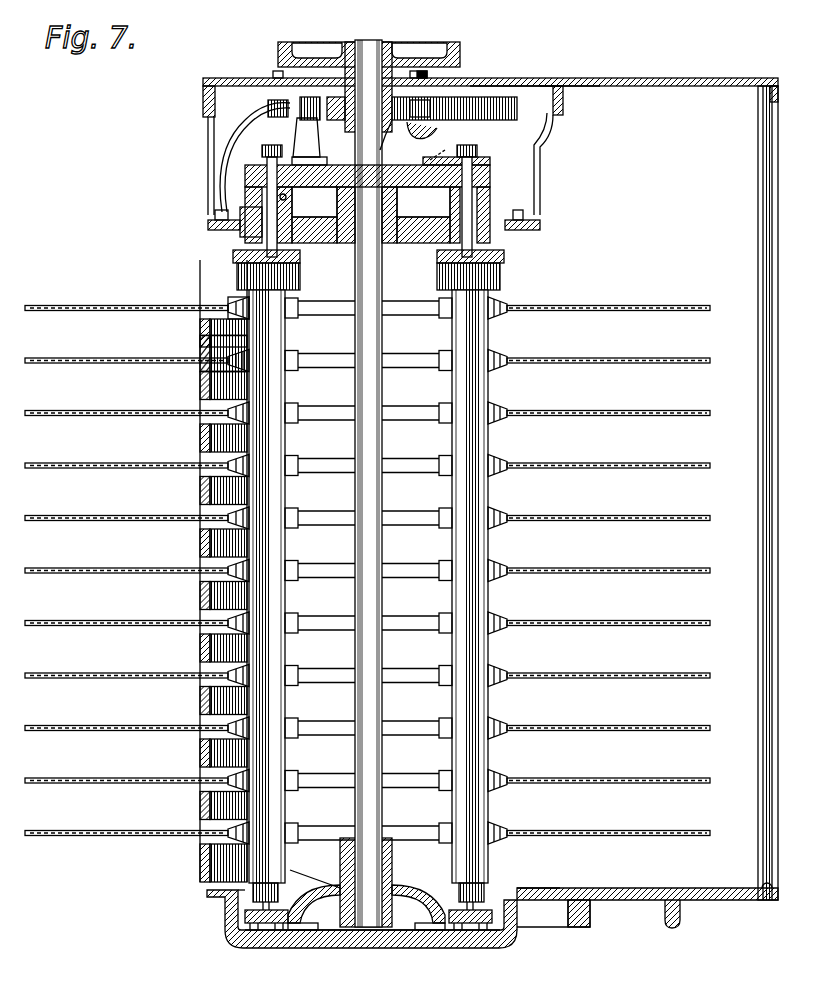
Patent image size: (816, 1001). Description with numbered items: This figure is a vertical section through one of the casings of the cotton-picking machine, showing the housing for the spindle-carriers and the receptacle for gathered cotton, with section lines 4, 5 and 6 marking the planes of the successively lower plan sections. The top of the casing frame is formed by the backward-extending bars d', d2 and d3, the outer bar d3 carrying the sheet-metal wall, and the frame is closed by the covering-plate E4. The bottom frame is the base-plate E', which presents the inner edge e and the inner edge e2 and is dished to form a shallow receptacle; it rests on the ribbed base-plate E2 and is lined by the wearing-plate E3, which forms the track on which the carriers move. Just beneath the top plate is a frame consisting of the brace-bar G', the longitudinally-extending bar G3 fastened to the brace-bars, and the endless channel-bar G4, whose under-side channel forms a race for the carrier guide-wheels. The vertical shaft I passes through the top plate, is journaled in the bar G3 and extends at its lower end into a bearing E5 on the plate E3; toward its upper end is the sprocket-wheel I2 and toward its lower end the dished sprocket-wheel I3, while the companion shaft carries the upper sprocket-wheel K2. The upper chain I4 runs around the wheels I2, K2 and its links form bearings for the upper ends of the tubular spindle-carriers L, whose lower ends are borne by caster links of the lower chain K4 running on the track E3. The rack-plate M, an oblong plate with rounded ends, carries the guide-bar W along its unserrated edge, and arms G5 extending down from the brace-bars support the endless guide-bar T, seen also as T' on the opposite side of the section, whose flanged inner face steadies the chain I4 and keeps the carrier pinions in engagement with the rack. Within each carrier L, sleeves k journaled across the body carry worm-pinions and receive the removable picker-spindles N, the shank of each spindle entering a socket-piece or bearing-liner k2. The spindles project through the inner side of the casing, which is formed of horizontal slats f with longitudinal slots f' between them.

The backward-extending bar d' is at (490, 71).
The backward-extending bar d2 is at (555, 80).
The backward-extending bar d3 is at (772, 78).
The covering-plate E4 is at (508, 78).
The brace-bar G' is at (392, 104).
The longitudinally-extending bar G3 is at (312, 157).
The endless channel-bar G4 is at (430, 137).
The guide-bar W is at (448, 160).
The arm G5 is at (212, 196).
The endless guide-bar T is at (202, 224).
The bracket T' is at (520, 233).
The upper sprocket-wheel I2 is at (326, 214).
The rack-plate M is at (413, 215).
The socket-piece or bearing-liner k2 is at (485, 165).
The sleeve k is at (485, 203).
The upper chain I4 is at (240, 246).
The spindle-carrier L is at (285, 443).
The horizontal slat f is at (205, 571).
The longitudinal slot f' is at (204, 456).
The picker-spindle N is at (75, 516).
The shaft I is at (382, 497).
The wearing-plate E3 is at (270, 935).
The base-plate E' is at (372, 952).
The bearing E5 is at (400, 930).
The base-plate E2 is at (642, 902).
The upper sprocket-wheel K2 is at (250, 895).
The lower chain K4 is at (487, 893).
The inner side bar or edge e is at (207, 890).
The inner bar or edge e2 is at (545, 890).
The lower sprocket-wheel I3 is at (315, 870).
The section line 4 is at (203, 83).
The section line 5 is at (215, 157).
The section line 6 is at (335, 333).